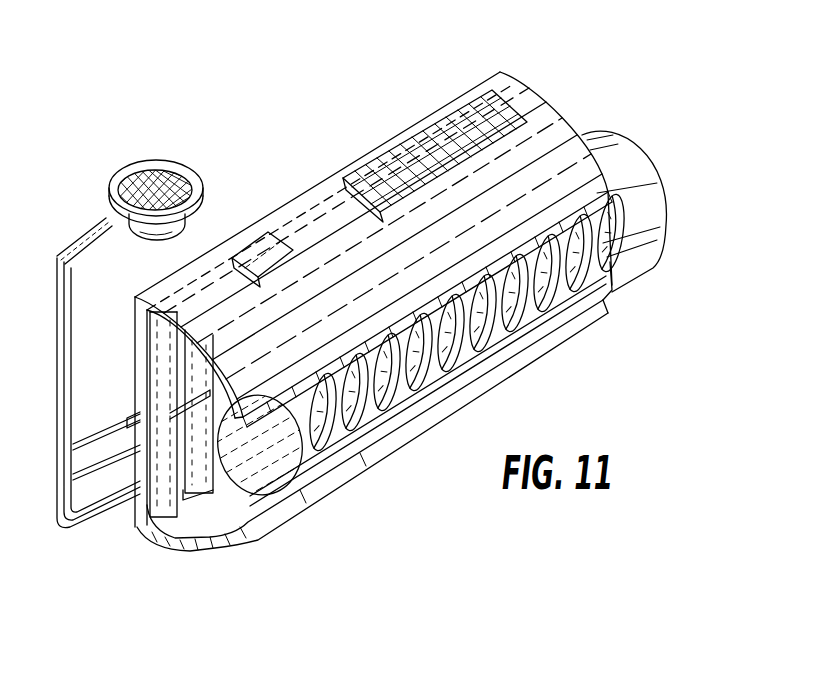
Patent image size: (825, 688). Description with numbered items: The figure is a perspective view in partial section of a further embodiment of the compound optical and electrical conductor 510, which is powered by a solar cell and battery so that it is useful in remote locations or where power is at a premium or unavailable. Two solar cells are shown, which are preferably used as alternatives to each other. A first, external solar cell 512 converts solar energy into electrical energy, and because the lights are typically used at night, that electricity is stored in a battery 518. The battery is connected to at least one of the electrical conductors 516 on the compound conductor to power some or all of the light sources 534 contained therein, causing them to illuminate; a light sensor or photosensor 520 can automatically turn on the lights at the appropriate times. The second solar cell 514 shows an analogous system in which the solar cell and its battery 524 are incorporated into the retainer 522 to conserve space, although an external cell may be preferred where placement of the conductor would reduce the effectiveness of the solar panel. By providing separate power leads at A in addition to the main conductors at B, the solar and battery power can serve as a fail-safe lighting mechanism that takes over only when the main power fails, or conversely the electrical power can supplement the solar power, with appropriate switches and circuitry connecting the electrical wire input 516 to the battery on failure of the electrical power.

The compound optical and electrical conductor 510 is at (664, 336).
The external solar cell 512 is at (137, 158).
The solar cell 514 is at (418, 125).
The electrical conductor 516 is at (93, 523).
The battery 518 is at (112, 222).
The light sensor or photosensor 520 is at (203, 192).
The retainer 522 is at (433, 268).
The battery 524 is at (267, 240).
The light source 534 is at (397, 425).
The separate power leads A is at (130, 527).
The conductors B is at (140, 377).